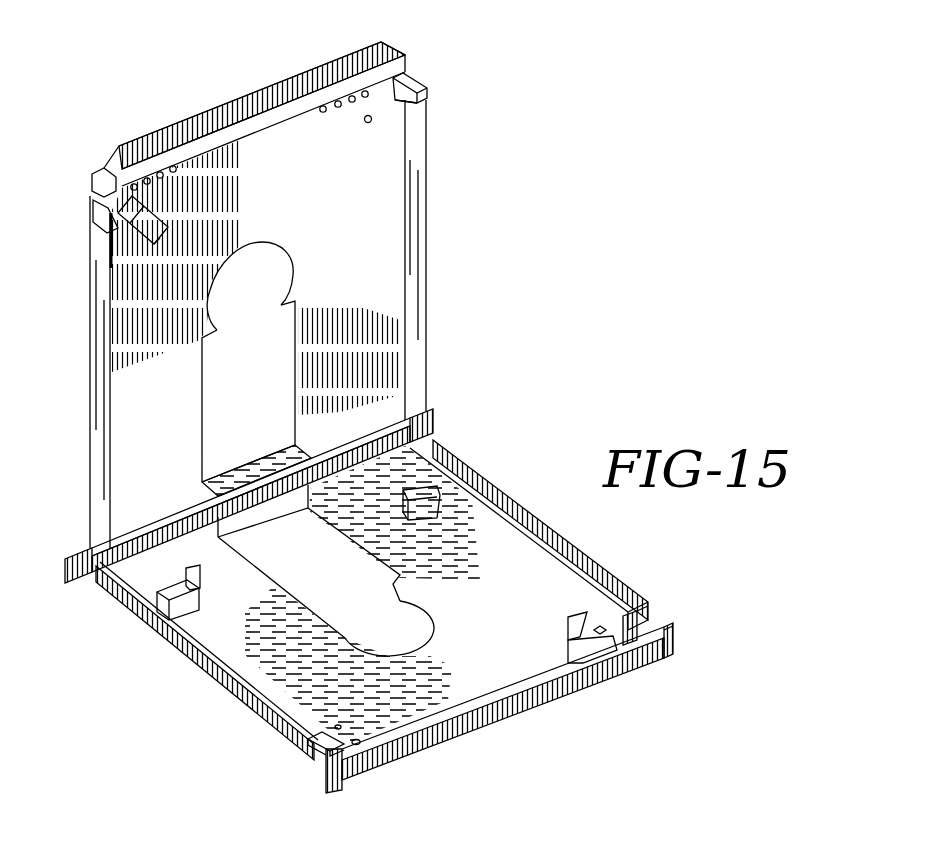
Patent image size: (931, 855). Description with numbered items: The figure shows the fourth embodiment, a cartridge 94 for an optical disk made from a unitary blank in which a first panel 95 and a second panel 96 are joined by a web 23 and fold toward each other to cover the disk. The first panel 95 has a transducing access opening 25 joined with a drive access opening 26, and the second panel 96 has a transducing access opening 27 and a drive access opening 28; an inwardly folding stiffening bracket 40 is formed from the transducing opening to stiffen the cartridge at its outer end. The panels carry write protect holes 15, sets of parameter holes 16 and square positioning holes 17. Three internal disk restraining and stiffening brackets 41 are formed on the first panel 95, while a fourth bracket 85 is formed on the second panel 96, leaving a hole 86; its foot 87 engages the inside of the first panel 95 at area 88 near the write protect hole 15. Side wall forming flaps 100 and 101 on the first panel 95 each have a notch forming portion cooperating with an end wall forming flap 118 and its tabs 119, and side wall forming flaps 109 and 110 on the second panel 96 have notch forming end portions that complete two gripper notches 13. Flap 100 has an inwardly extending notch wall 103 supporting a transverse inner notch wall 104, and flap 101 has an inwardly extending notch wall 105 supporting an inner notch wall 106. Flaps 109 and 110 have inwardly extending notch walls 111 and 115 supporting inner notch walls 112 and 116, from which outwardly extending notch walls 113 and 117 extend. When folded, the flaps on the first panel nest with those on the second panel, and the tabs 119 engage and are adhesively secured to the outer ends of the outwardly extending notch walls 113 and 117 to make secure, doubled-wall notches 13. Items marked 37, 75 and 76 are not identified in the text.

The cartridge gripper notches 13 is at (317, 780).
The write protect hole 15 is at (368, 123).
The sets of holes 16 is at (314, 109).
The square holes 17 is at (117, 235).
The web 23 is at (362, 450).
The transducing access opening 25 is at (333, 582).
The drive access opening 26 is at (403, 641).
The transducing access opening 27 is at (268, 400).
The drive access opening 28 is at (264, 302).
The rail end block 37 is at (78, 560).
The inwardly folding stiffening bracket 40 is at (262, 508).
The bracket 41 is at (200, 590).
The top rail 75 is at (256, 93).
The top rail end 76 is at (396, 52).
The bracket 85 is at (168, 214).
The hole 86 is at (102, 173).
The foot 87 is at (163, 235).
The area 88 is at (340, 725).
The cartridge 94 is at (508, 457).
The first panel 95 is at (502, 557).
The second panel 96 is at (395, 312).
The side wall forming flap 100 is at (250, 700).
The side wall forming flap 101 is at (560, 537).
The inwardly extending notch wall 103 is at (308, 742).
The inner notch wall 104 is at (345, 752).
The inwardly extending notch wall 105 is at (630, 615).
The inner notch wall 106 is at (652, 640).
The side wall forming flap 109 is at (110, 380).
The side wall forming flap 110 is at (427, 213).
The inwardly extending notch wall 111 is at (93, 207).
The inner notch wall 112 is at (140, 200).
The outwardly extending notch wall 113 is at (92, 192).
The inwardly extending notch wall 115 is at (420, 103).
The inner notch wall 116 is at (420, 86).
The outwardly extending notch wall 117 is at (407, 75).
The end wall forming flap 118 is at (512, 713).
The tab 119 is at (334, 792).